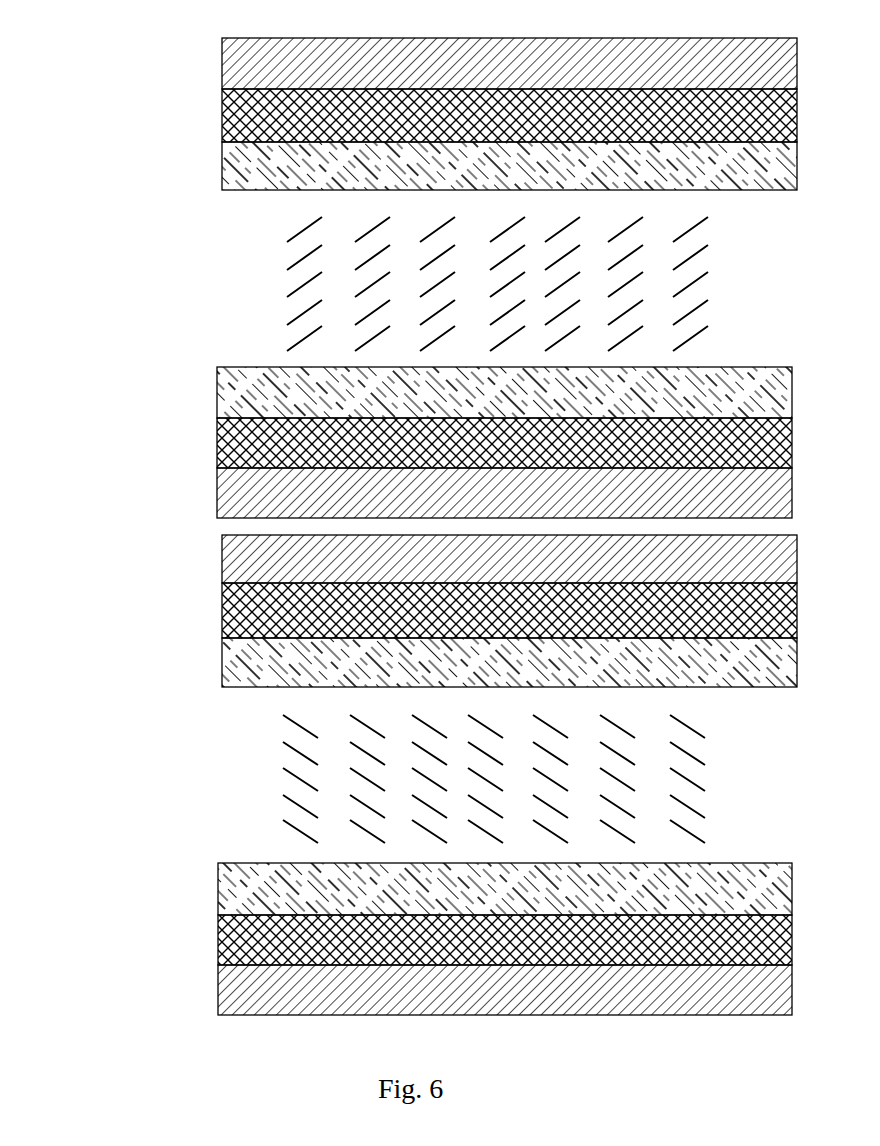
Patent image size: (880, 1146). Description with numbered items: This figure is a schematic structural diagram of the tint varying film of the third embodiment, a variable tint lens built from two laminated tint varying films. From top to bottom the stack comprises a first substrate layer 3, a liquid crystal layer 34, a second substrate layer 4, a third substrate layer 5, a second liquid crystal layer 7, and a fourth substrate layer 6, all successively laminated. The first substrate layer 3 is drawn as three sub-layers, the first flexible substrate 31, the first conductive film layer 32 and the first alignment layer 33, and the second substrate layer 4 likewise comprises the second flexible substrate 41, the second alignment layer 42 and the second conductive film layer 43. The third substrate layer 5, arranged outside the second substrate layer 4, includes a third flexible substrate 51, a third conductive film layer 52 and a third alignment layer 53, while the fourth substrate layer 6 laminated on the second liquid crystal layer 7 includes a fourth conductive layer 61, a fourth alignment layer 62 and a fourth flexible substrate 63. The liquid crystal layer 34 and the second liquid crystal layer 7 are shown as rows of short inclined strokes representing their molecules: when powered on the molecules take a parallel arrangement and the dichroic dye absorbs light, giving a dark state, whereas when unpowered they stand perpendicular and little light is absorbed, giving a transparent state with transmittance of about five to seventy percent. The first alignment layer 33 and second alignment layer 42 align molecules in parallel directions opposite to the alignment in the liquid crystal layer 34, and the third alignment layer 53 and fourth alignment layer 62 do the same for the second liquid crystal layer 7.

The first substrate layer 3 is at (416, 628).
The first flexible substrate 31 is at (222, 553).
The first conductive film layer 32 is at (222, 615).
The first alignment layer 33 is at (222, 667).
The liquid crystal layer 34 is at (270, 790).
The second substrate layer 4 is at (414, 948).
The second flexible substrate 41 is at (454, 999).
The second alignment layer 42 is at (218, 937).
The second conductive film layer 43 is at (218, 893).
The third substrate layer 5 is at (417, 114).
The third flexible substrate 51 is at (222, 55).
The third conductive film layer 52 is at (222, 113).
The third alignment layer 53 is at (456, 166).
The fourth substrate layer 6 is at (404, 442).
The fourth conductive layer 61 is at (217, 382).
The fourth alignment layer 62 is at (217, 434).
The fourth flexible substrate 63 is at (217, 487).
The second liquid crystal layer 7 is at (285, 283).